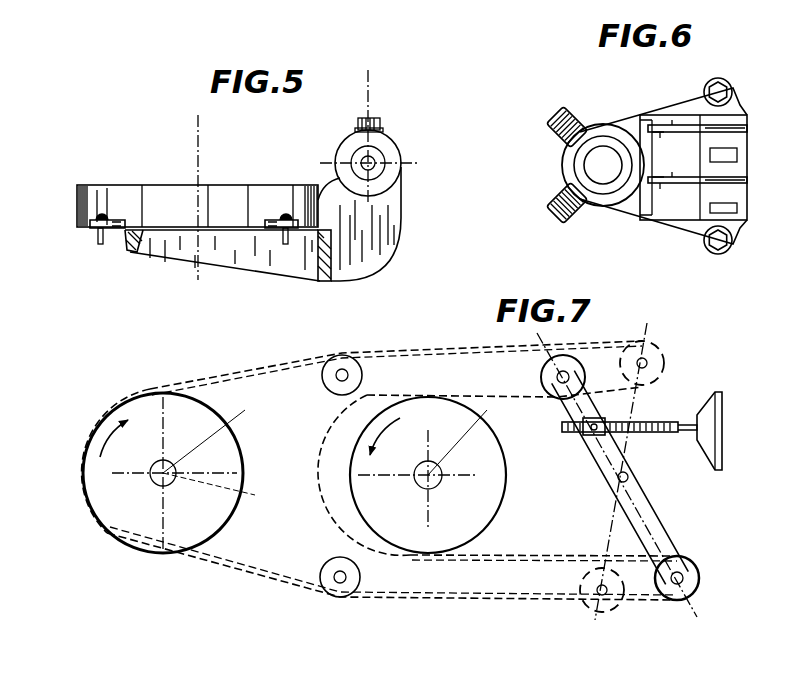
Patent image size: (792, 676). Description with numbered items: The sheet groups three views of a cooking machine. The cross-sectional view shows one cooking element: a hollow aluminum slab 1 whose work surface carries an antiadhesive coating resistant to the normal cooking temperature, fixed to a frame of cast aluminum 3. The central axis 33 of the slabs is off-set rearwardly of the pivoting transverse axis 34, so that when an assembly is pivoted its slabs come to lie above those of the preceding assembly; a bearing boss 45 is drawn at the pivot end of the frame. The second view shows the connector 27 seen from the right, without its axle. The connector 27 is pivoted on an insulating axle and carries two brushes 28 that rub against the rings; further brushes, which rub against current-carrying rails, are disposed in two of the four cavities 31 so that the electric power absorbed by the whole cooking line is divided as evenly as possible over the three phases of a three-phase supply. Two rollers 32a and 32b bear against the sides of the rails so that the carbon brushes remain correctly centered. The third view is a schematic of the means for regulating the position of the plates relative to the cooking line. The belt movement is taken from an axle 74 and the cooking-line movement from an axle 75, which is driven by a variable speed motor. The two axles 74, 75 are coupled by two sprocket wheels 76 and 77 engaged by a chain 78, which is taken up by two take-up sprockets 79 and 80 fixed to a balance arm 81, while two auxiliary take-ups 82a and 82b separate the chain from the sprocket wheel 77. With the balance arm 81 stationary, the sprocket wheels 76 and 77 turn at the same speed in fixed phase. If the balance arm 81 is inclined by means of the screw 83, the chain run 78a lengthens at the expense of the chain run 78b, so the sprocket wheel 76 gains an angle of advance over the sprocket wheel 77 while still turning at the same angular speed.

In FIG. 5, the hollow aluminum slab 1 is at (233, 207).
In FIG. 5, the frame of cast aluminum 3 is at (228, 247).
In FIG. 5, the central axis of the slabs 33 is at (200, 147).
In FIG. 5, the pivoting transverse axis 34 is at (369, 103).
In FIG. 5, the pivot bearing boss 45 is at (375, 157).
In FIG. 6, the connector 27 is at (618, 114).
In FIG. 6, the brushes 28 is at (565, 115).
In FIG. 6, the cavities 31 is at (740, 122).
In FIG. 6, the roller 32a is at (732, 247).
In FIG. 6, the roller 32b is at (731, 88).
In FIG. 7, the axle 74 is at (150, 478).
In FIG. 7, the axle 75 is at (417, 482).
In FIG. 7, the sprocket wheel 76 is at (195, 518).
In FIG. 7, the sprocket wheel 77 is at (470, 517).
In FIG. 7, the chain 78 is at (540, 557).
In FIG. 7, the chain run 78a is at (485, 347).
In FIG. 7, the chain run 78b is at (487, 600).
In FIG. 7, the take-up sprocket 79 is at (687, 570).
In FIG. 7, the take-up sprocket 80 is at (567, 363).
In FIG. 7, the balance arm 81 is at (648, 517).
In FIG. 7, the auxiliary take-up 82a is at (355, 372).
In FIG. 7, the auxiliary take-up 82b is at (355, 577).
In FIG. 7, the screw 83 is at (652, 422).